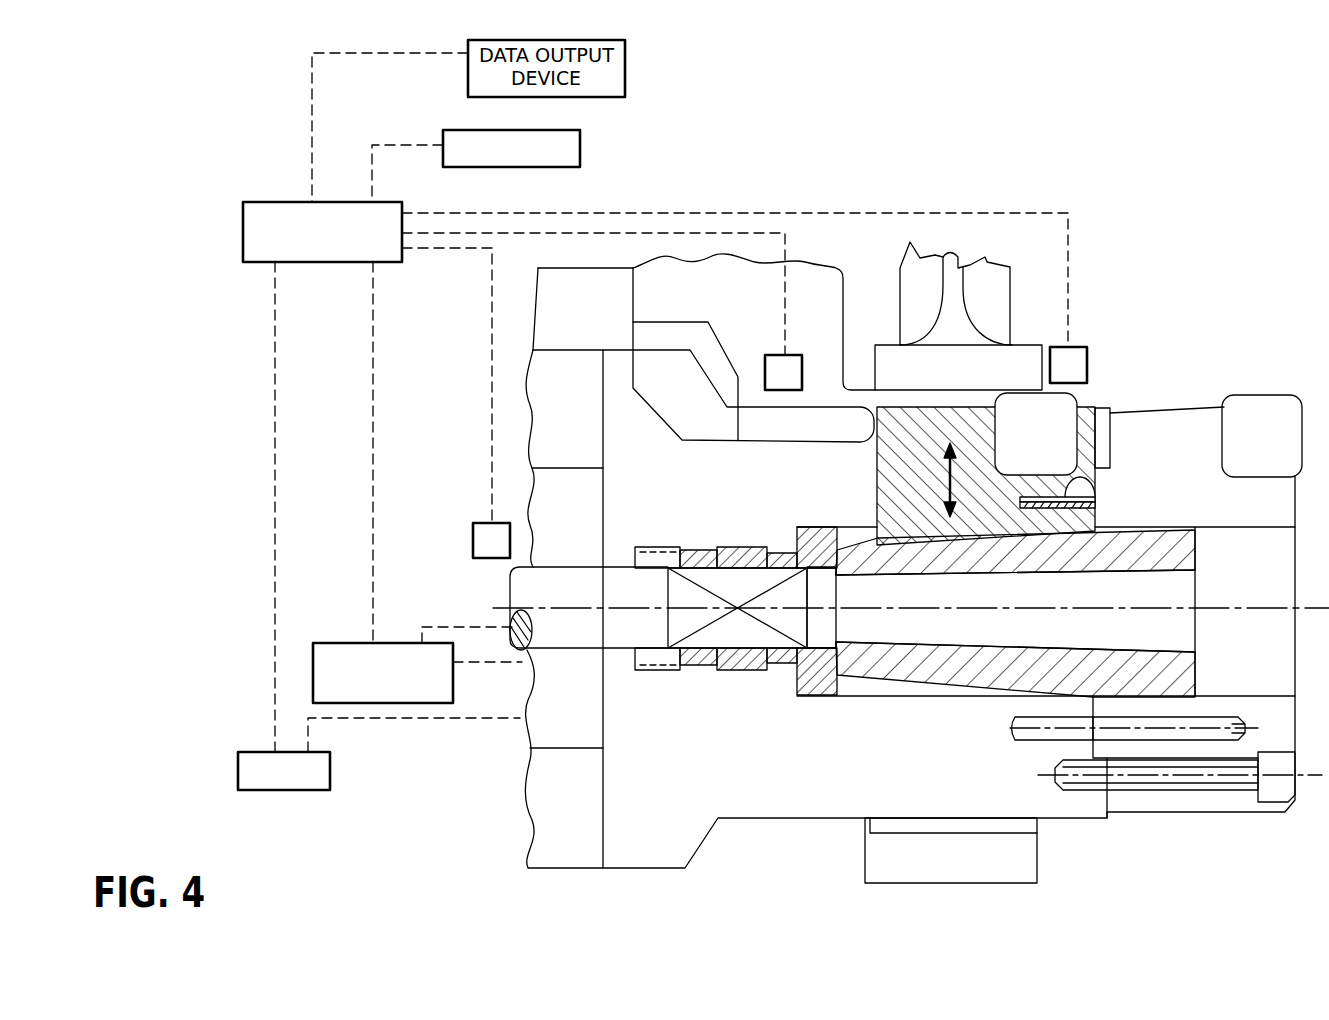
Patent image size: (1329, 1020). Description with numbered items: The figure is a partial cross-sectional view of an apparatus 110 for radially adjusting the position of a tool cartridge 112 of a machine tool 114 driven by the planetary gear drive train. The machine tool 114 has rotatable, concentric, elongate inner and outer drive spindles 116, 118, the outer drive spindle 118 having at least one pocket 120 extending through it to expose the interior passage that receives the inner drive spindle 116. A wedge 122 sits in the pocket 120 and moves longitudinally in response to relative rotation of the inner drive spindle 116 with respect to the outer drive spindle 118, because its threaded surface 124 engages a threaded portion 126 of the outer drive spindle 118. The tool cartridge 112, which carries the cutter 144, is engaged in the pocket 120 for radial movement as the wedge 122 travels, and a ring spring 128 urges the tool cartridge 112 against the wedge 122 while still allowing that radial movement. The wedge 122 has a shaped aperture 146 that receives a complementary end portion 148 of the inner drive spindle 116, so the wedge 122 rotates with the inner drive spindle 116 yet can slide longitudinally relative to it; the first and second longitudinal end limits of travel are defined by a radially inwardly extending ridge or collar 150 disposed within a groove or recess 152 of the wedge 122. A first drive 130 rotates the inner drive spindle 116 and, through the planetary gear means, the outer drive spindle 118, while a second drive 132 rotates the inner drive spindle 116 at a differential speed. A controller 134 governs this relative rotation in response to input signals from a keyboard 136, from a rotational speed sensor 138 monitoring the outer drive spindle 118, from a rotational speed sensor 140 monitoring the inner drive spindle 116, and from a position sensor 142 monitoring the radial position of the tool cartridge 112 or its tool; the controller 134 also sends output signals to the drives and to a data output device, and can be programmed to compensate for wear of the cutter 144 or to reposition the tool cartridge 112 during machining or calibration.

The apparatus 110 is at (1237, 165).
The tool cartridge 112 is at (1088, 444).
The machine tool 114 is at (823, 833).
The inner drive spindle 116 is at (590, 601).
The outer drive spindle 118 is at (743, 793).
The pocket 120 is at (886, 470).
The wedge 122 is at (1190, 553).
The threaded surface 124 is at (681, 595).
The threaded portion 126 is at (648, 660).
The spring 128 is at (1097, 478).
The first drive 130 is at (328, 643).
The second drive 132 is at (238, 768).
The controller 134 is at (243, 240).
The keyboard 136 is at (580, 148).
The rotational speed sensor 138 is at (773, 355).
The rotational speed sensor 140 is at (473, 540).
The position sensor 142 is at (1084, 347).
The cutter 144 is at (1078, 397).
The shaped aperture 146 is at (820, 647).
The end portion 148 is at (688, 548).
The ridge or collar 150 is at (817, 545).
The groove or recess 152 is at (742, 548).